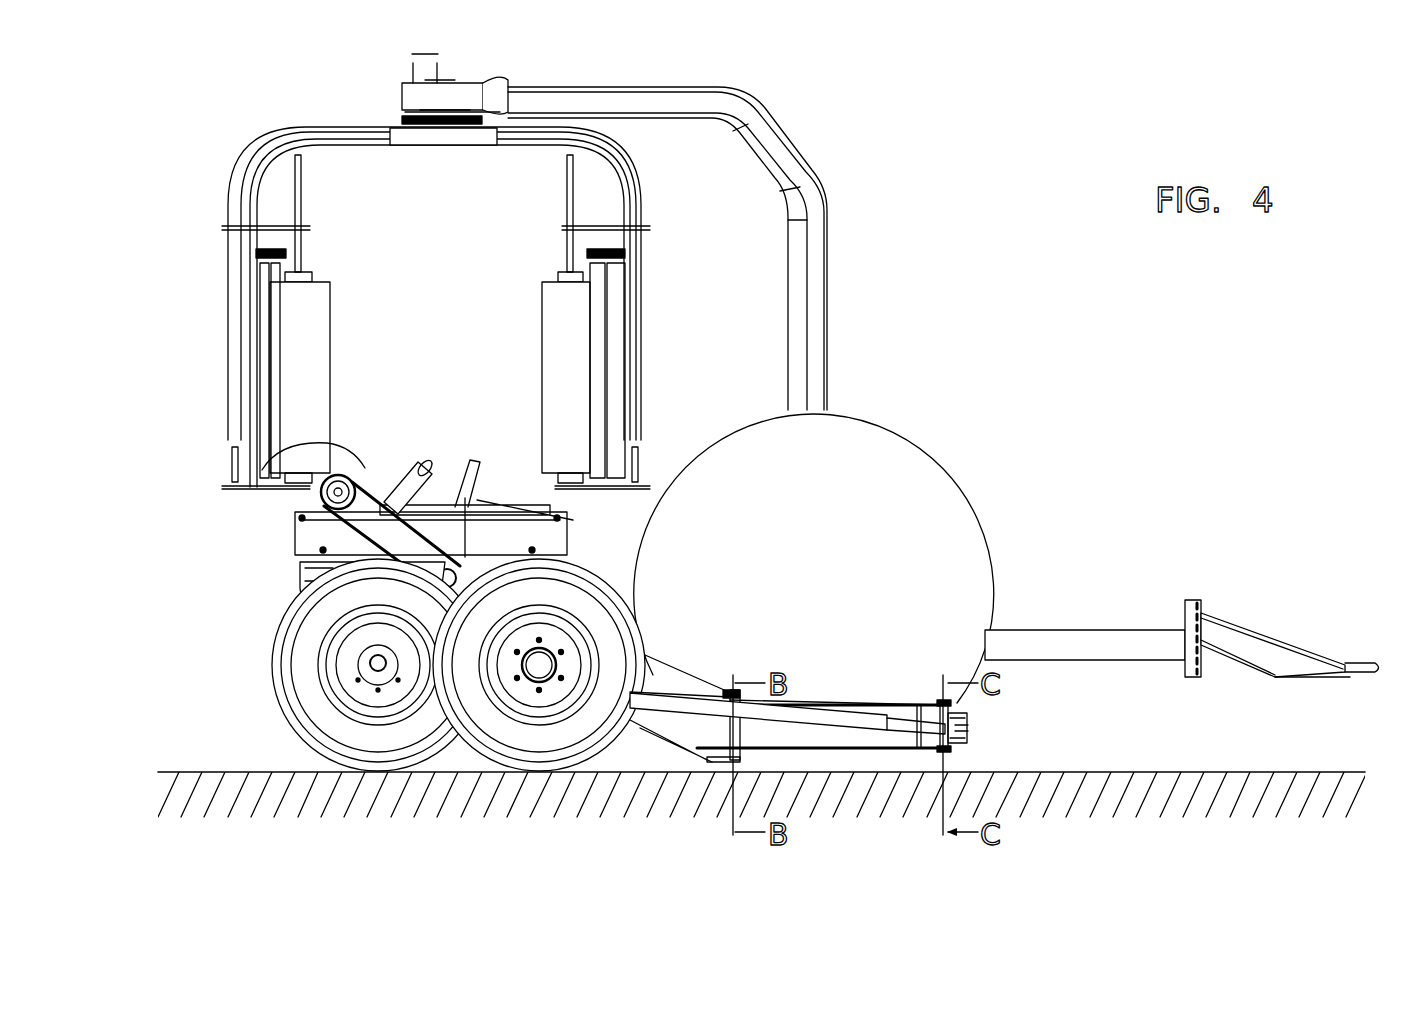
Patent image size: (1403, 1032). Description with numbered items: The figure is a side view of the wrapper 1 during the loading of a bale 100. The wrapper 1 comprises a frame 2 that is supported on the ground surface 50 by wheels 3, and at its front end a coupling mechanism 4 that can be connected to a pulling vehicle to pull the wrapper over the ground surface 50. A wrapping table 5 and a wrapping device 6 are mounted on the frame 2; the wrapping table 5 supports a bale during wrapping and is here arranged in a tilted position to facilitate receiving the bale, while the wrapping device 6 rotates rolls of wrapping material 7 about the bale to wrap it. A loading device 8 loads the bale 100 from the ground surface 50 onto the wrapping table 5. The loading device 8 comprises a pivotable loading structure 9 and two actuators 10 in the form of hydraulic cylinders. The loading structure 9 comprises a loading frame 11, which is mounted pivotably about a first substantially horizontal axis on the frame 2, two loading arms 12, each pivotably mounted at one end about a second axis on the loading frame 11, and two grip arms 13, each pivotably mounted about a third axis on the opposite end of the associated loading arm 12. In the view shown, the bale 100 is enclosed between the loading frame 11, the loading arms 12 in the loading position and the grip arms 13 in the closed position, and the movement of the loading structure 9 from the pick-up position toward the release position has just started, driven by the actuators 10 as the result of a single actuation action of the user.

The wrapper 1 is at (238, 125).
The frame 2 is at (1093, 643).
The wheels 3 is at (310, 733).
The coupling mechanism 4 is at (1370, 667).
The wrapping table 5 is at (272, 468).
The wrapping device 6 is at (243, 165).
The rolls of wrapping material 7 is at (295, 391).
The loading device 8 is at (795, 660).
The pivotable loading structure 9 is at (652, 762).
The actuators 10 is at (833, 718).
The loading frame 11 is at (670, 682).
The loading arms 12 is at (767, 733).
The grip arms 13 is at (982, 730).
The ground surface 50 is at (193, 772).
The bale 100 is at (902, 422).